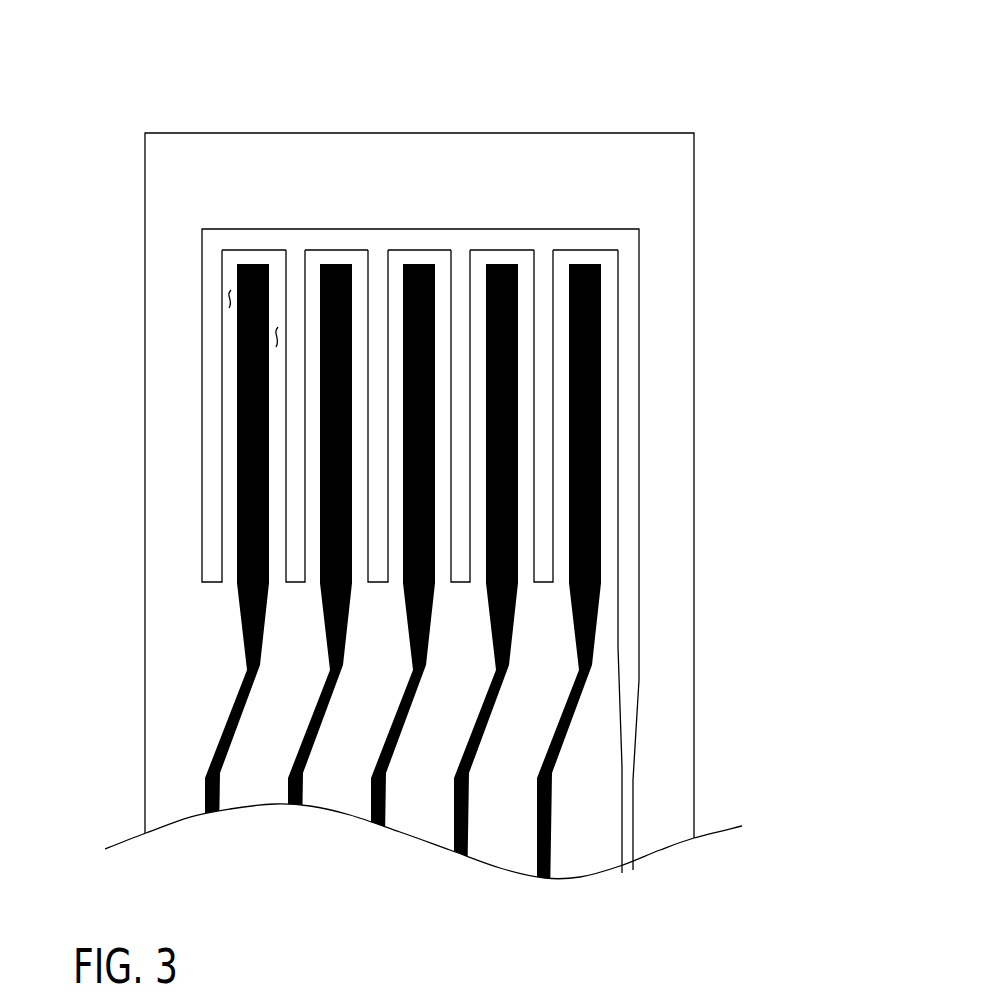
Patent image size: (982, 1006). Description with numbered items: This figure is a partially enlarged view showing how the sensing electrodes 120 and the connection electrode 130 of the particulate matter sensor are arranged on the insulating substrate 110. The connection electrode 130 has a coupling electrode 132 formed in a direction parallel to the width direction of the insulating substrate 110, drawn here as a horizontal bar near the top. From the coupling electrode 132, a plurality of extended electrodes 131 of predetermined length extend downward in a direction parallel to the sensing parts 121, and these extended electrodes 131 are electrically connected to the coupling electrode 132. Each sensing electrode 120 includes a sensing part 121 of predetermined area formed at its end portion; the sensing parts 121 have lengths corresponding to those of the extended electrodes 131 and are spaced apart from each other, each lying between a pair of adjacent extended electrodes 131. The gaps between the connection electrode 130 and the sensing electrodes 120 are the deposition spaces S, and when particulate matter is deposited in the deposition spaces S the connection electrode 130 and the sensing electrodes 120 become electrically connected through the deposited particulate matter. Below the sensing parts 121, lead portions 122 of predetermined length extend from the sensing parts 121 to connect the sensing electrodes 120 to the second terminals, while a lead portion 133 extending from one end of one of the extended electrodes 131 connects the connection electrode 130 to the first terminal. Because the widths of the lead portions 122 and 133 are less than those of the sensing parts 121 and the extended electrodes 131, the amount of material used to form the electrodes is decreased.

The insulating substrate 110 is at (419, 133).
The sensing electrodes 120 is at (305, 582).
The sensing parts 121 is at (237, 545).
The lead portions 122 is at (341, 741).
The connection electrode 130 is at (530, 541).
The extended electrodes 131 is at (462, 433).
The coupling electrode 132 is at (543, 238).
The lead portion 133 is at (787, 244).
The deposition spaces S is at (237, 338).